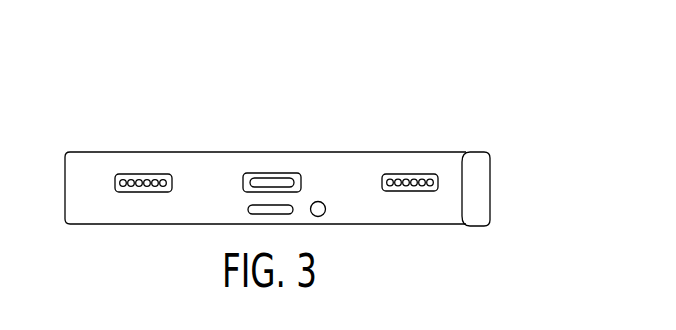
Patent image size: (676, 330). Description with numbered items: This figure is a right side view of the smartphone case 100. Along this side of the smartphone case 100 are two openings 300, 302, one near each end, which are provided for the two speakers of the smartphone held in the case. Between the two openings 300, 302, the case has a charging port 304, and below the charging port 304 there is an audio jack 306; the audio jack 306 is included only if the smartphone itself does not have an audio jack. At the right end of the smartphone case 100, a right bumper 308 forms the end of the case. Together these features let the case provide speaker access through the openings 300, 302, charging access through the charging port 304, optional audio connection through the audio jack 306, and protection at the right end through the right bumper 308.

The smartphone case 100 is at (498, 92).
The opening 300 is at (143, 174).
The opening 302 is at (412, 174).
The charging port 304 is at (271, 173).
The audio jack 306 is at (326, 209).
The right bumper 308 is at (495, 188).